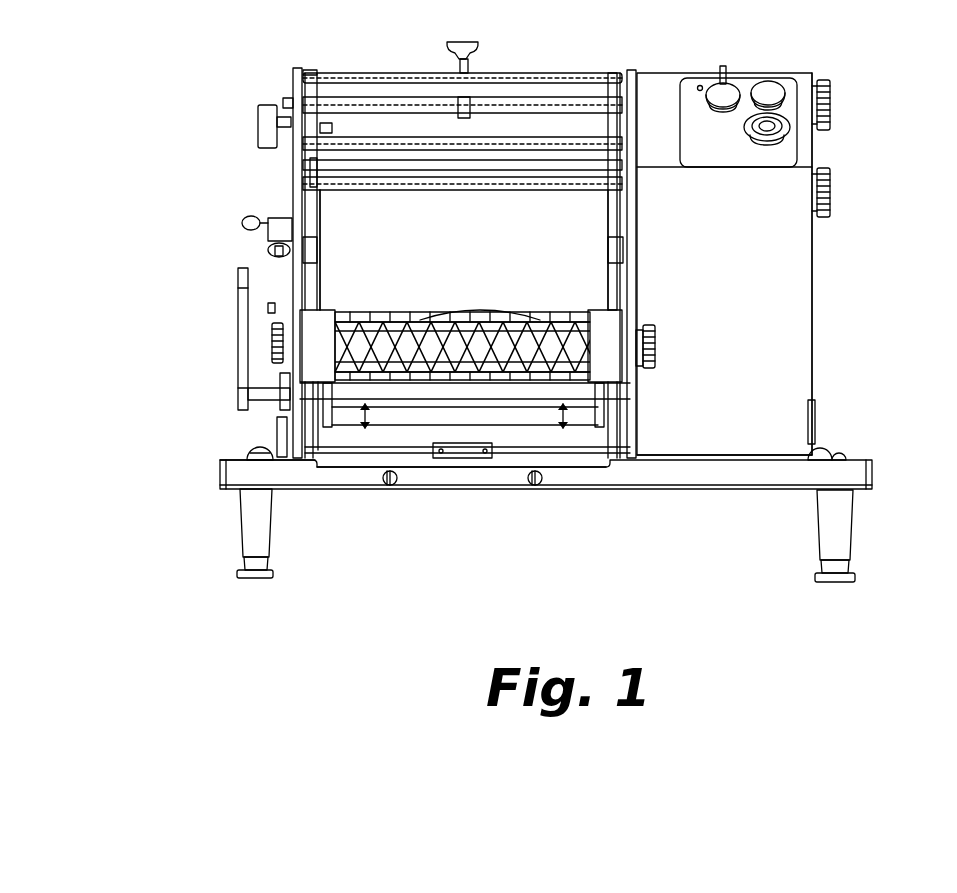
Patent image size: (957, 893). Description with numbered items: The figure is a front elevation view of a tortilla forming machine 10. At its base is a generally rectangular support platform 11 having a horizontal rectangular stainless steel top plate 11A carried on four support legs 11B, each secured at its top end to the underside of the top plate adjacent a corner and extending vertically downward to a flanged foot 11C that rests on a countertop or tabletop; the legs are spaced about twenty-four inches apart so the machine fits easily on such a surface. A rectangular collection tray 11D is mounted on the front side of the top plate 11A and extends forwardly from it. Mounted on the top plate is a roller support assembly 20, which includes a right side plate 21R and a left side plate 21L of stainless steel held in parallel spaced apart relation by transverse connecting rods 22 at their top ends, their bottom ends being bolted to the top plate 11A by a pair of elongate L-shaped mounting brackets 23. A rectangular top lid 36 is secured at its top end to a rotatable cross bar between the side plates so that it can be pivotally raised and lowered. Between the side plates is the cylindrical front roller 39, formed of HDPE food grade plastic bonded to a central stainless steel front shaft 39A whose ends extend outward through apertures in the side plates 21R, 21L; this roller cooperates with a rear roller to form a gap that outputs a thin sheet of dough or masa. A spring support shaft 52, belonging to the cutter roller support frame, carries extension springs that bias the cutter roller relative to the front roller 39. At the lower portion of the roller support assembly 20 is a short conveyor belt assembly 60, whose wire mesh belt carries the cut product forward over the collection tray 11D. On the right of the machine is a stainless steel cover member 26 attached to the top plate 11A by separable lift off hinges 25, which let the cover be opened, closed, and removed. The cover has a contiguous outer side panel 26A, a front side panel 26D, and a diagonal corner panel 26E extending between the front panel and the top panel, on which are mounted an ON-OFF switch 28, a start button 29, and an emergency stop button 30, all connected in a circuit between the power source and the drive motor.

The tortilla forming machine 10 is at (163, 97).
The support platform 11 is at (212, 496).
The top plate 11A is at (238, 459).
The support legs 11B is at (272, 545).
The flanged foot 11C is at (258, 579).
The collection tray 11D is at (546, 470).
The roller support assembly 20 is at (230, 198).
The left side plate 21L is at (300, 190).
The right side plate 21R is at (628, 257).
The transverse connecting rods 22 is at (345, 145).
The L-shaped mounting brackets 23 is at (283, 442).
The lift off hinge 25 is at (820, 445).
The cover member 26 is at (822, 310).
The outer side panel 26A is at (815, 342).
The front side panel 26D is at (738, 363).
The diagonal corner panel 26E is at (663, 95).
The ON-OFF switch 28 is at (734, 80).
The start button 29 is at (774, 90).
The emergency stop button 30 is at (792, 130).
The top lid 36 is at (513, 72).
The front roller 39 is at (470, 269).
The front shaft 39A is at (310, 260).
The spring support shaft 52 is at (237, 330).
The conveyor belt assembly 60 is at (456, 373).